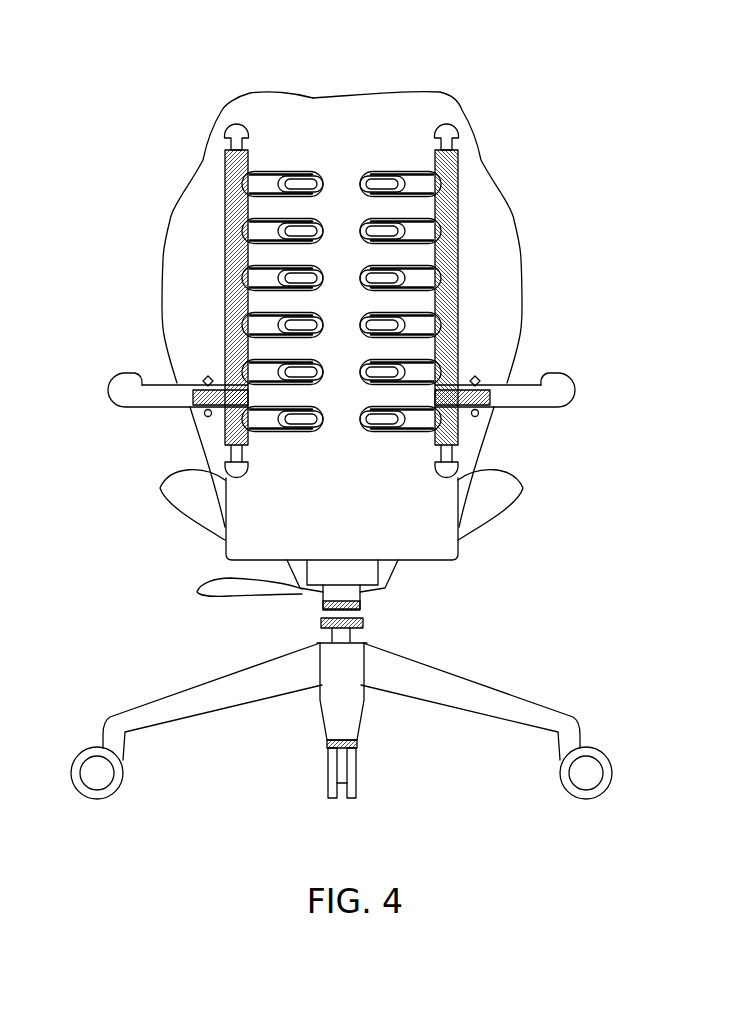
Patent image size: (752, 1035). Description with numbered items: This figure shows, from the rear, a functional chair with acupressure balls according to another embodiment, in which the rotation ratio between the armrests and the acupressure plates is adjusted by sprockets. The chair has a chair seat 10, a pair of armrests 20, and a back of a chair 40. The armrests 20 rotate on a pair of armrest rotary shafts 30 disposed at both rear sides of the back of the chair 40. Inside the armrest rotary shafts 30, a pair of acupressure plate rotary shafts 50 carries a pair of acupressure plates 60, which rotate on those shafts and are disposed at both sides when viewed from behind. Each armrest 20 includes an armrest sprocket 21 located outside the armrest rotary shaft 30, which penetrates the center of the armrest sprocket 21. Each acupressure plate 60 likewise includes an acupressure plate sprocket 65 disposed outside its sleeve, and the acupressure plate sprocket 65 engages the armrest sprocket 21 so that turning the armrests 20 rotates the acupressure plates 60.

The chair seat 10 is at (160, 490).
The armrest 20 is at (122, 372).
The armrest sprocket 21 is at (477, 416).
The armrest rotary shaft 30 is at (477, 385).
The back of a chair 40 is at (313, 98).
The acupressure plate rotary shaft 50 is at (455, 140).
The acupressure plate 60 is at (458, 212).
The acupressure plate sprocket 65 is at (455, 426).